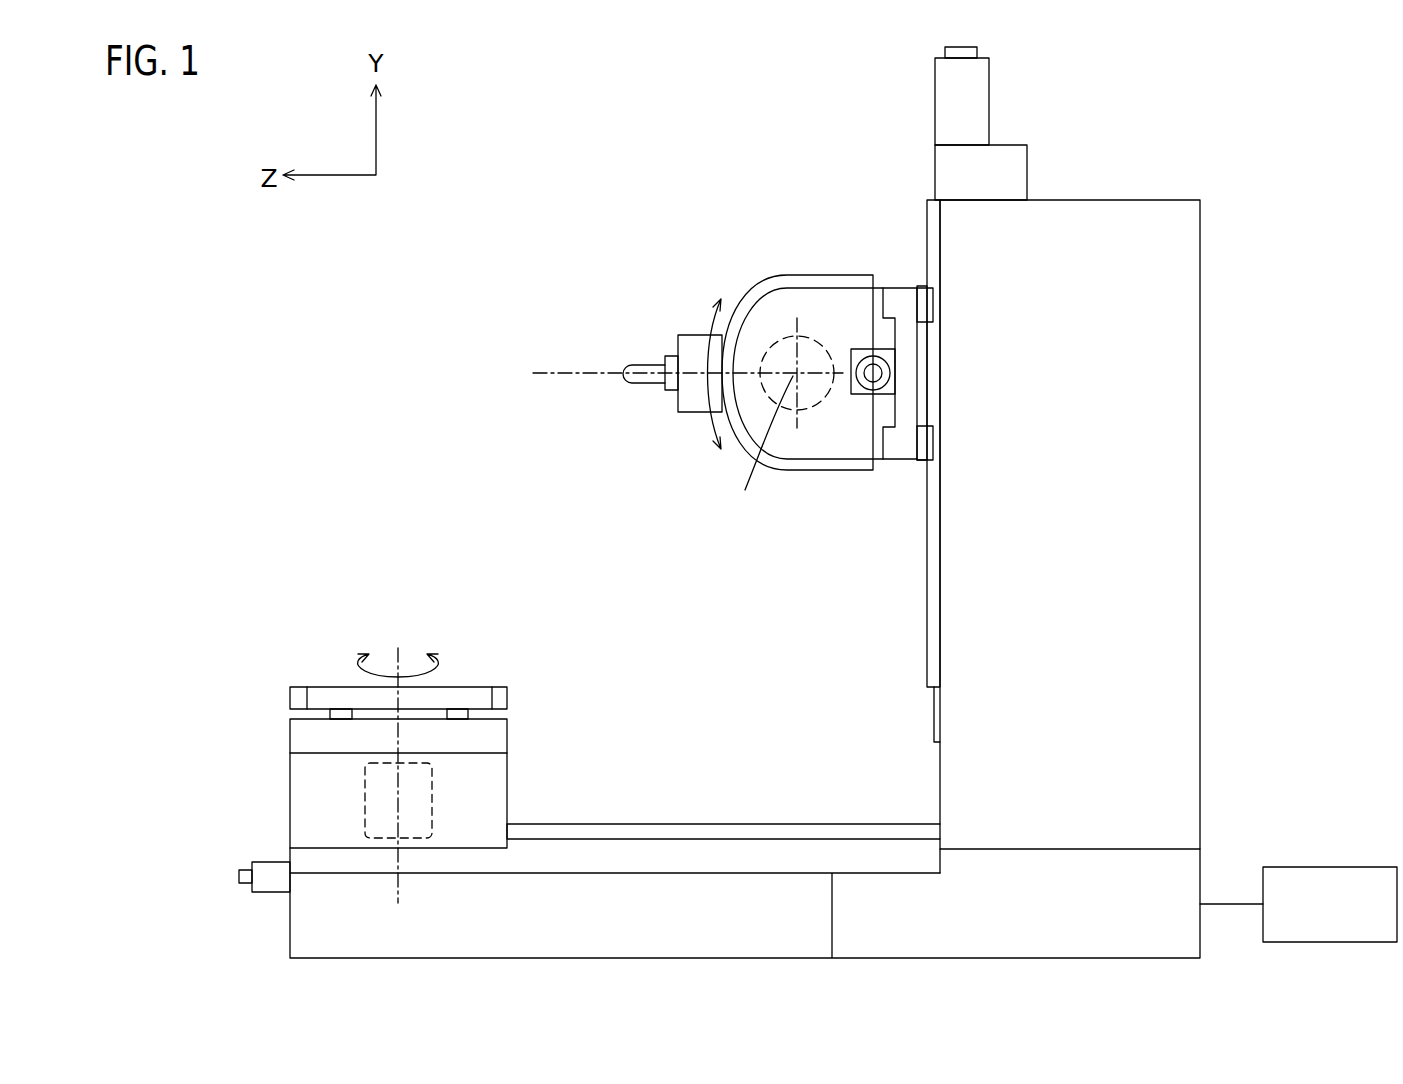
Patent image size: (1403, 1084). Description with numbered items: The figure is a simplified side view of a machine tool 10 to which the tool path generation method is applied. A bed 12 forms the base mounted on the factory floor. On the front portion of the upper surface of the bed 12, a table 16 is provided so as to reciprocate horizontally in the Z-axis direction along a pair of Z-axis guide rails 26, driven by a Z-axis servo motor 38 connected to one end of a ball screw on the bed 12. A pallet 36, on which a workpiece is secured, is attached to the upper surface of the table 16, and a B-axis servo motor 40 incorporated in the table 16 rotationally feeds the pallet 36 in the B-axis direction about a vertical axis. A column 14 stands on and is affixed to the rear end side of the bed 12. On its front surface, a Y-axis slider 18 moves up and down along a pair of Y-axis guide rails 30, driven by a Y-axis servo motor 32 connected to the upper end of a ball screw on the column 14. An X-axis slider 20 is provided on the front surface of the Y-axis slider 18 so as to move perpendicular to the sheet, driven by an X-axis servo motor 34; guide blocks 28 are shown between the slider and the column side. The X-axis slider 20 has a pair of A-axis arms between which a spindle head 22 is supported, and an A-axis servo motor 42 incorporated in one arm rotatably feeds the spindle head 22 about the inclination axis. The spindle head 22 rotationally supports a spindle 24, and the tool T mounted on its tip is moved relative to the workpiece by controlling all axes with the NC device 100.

The machine tool 10 is at (1269, 177).
The bed 12 is at (682, 920).
The column 14 is at (1142, 222).
The table 16 is at (312, 793).
The Y-axis slider 18 is at (900, 297).
The X-axis slider 20 is at (820, 312).
The spindle head 22 is at (692, 355).
The spindle 24 is at (672, 362).
The Z-axis guide rails 26 is at (757, 832).
The guide blocks 28 is at (925, 440).
The Y-axis guide rails 30 is at (935, 627).
The Y-axis servo motor 32 is at (965, 102).
The X-axis servo motor 34 is at (872, 378).
The pallet 36 is at (325, 698).
The Z-axis servo motor 38 is at (273, 887).
The B-axis servo motor 40 is at (432, 783).
The A-axis servo motor 42 is at (773, 345).
The NC device 100 is at (1327, 865).
The tool T is at (645, 367).